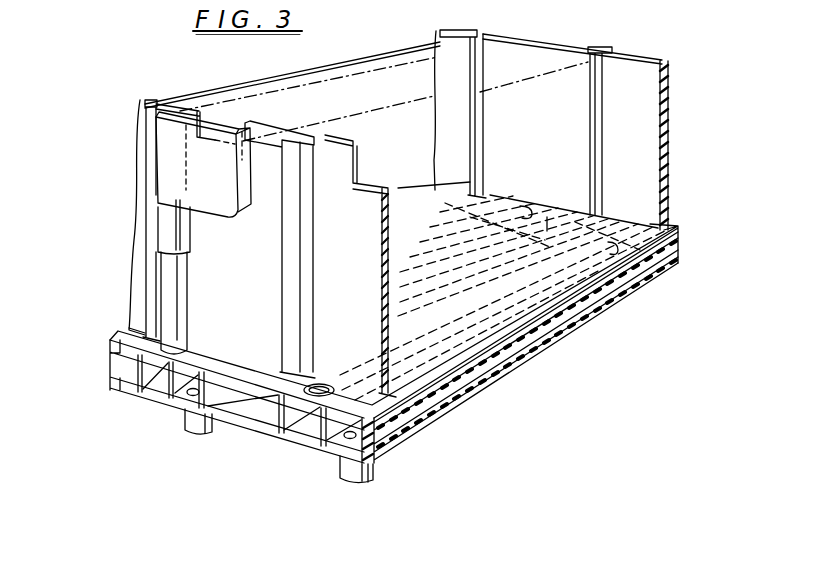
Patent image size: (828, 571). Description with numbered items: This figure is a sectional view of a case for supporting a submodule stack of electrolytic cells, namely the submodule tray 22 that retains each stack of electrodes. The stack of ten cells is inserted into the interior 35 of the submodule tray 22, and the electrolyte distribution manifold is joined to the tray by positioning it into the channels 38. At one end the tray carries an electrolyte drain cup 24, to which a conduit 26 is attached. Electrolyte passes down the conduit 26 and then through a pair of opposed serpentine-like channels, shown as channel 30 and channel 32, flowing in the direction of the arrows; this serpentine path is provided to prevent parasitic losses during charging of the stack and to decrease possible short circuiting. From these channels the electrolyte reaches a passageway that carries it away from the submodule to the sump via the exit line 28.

The submodule tray 22 is at (133, 258).
The electrolyte drain cup 24 is at (216, 190).
The conduit 26 is at (178, 308).
The exit line 28 is at (198, 432).
The channel 30 is at (157, 386).
The channel 32 is at (520, 205).
The interior 35 is at (418, 93).
The channels 38 is at (150, 112).